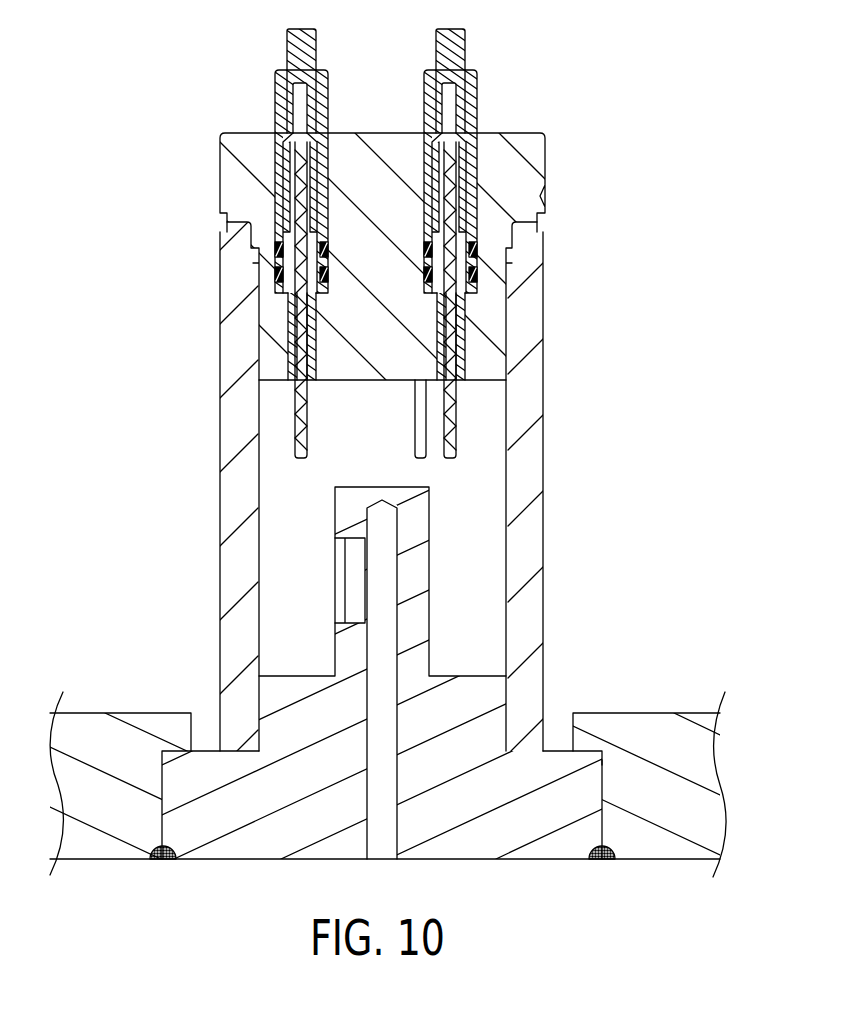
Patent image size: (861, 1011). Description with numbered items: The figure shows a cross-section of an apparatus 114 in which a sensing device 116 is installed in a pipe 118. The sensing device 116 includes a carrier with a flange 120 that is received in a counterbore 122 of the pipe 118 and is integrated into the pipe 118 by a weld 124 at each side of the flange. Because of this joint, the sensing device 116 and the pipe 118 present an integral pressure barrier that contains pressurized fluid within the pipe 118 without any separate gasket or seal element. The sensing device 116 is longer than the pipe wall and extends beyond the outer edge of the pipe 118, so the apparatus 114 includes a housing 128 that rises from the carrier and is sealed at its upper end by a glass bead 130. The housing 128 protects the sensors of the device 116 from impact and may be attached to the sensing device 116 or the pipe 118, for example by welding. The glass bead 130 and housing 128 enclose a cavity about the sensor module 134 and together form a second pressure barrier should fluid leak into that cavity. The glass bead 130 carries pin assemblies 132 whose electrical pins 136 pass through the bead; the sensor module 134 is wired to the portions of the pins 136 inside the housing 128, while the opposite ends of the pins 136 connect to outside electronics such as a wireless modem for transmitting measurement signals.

The apparatus 114 is at (72, 305).
The sensing device 116 is at (487, 704).
The pipe 118 is at (670, 745).
The flange 120 is at (587, 757).
The counterbore 122 is at (597, 777).
The weld 124 is at (177, 860).
The housing 128 is at (527, 477).
The glass bead 130 is at (510, 157).
The pin assemblies 132 is at (433, 220).
The sensor module 134 is at (357, 593).
The electrical pins 136 is at (452, 416).